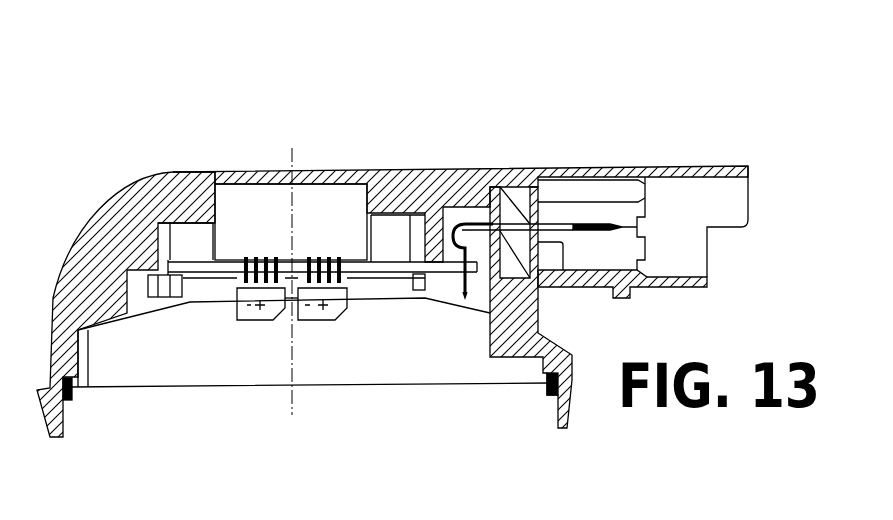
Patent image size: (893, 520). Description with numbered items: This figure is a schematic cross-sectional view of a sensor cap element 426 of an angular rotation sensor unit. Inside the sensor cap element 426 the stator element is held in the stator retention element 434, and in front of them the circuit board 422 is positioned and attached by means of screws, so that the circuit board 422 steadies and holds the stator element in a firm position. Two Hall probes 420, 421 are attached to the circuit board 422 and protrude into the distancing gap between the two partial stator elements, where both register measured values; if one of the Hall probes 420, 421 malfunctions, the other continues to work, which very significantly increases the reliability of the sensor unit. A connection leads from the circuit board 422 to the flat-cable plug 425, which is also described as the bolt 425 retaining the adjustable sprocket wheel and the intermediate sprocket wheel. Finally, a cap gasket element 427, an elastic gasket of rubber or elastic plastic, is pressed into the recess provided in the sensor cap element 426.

The Hall probe 420 is at (252, 257).
The Hall probe 421 is at (337, 257).
The stator retention element 434 is at (272, 217).
The sensor cap element 426 is at (433, 172).
The flat-cable plug 425 is at (670, 207).
The circuit board 422 is at (207, 275).
The cap gasket element 427 is at (546, 394).